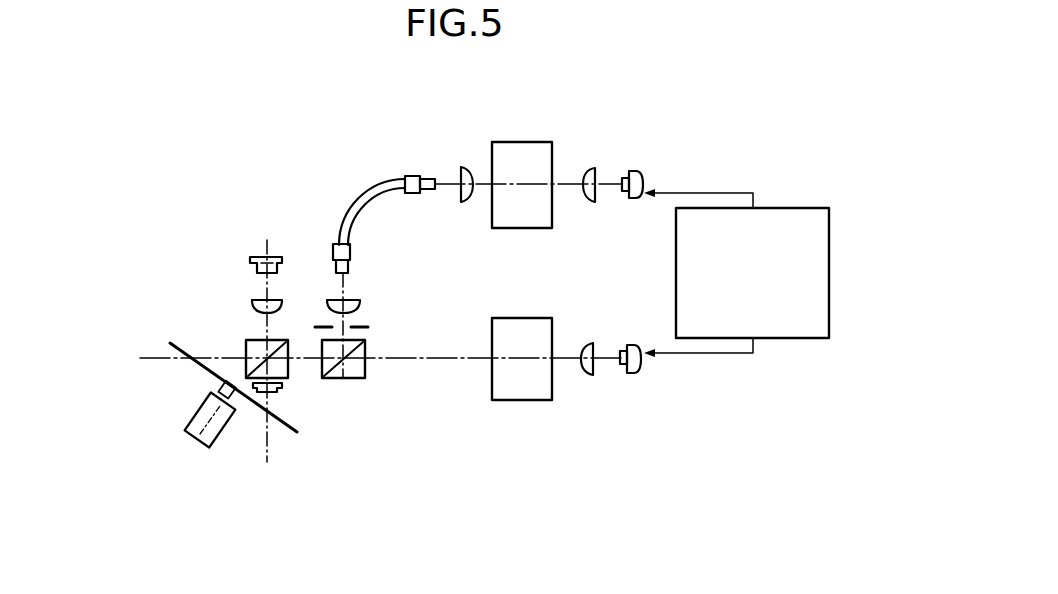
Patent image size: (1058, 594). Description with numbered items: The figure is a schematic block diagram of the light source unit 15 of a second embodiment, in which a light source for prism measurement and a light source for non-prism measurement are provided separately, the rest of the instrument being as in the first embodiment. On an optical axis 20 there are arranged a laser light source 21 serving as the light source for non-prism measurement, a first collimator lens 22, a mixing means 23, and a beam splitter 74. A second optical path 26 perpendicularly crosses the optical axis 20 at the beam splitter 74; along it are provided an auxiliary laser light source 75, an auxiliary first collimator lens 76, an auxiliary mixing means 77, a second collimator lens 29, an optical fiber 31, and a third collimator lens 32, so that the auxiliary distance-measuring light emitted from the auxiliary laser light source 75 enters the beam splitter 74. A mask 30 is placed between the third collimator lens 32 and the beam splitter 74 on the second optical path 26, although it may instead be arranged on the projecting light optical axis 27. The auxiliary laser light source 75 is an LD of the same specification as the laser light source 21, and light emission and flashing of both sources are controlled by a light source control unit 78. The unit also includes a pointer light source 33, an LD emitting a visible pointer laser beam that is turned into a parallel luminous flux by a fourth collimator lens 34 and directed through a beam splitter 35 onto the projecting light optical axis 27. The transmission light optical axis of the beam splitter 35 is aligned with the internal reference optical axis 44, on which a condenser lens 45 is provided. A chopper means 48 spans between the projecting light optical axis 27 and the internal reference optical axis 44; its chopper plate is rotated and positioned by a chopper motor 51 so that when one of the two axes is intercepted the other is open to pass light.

The light source unit 15 is at (440, 452).
The optical axis 20 is at (437, 360).
The laser light source 21 is at (635, 343).
The first collimator lens 22 is at (590, 376).
The mixing means 23 is at (523, 318).
The second optical path 26 is at (350, 293).
The projecting light optical axis 27 is at (150, 358).
The second collimator lens 29 is at (468, 168).
The mask 30 is at (367, 327).
The optical fiber 31 is at (372, 188).
The third collimator lens 32 is at (362, 306).
The pointer light source 33 is at (273, 257).
The fourth collimator lens 34 is at (248, 304).
The beam splitter 35 is at (245, 345).
The internal reference optical axis 44 is at (272, 445).
The condenser lens 45 is at (287, 390).
The chopper means 48 is at (245, 436).
The chopper motor 51 is at (213, 445).
The beam splitter 74 is at (366, 342).
The auxiliary laser light source 75 is at (643, 173).
The auxiliary first collimator lens 76 is at (590, 168).
The auxiliary mixing means 77 is at (525, 142).
The light source control unit 78 is at (785, 208).